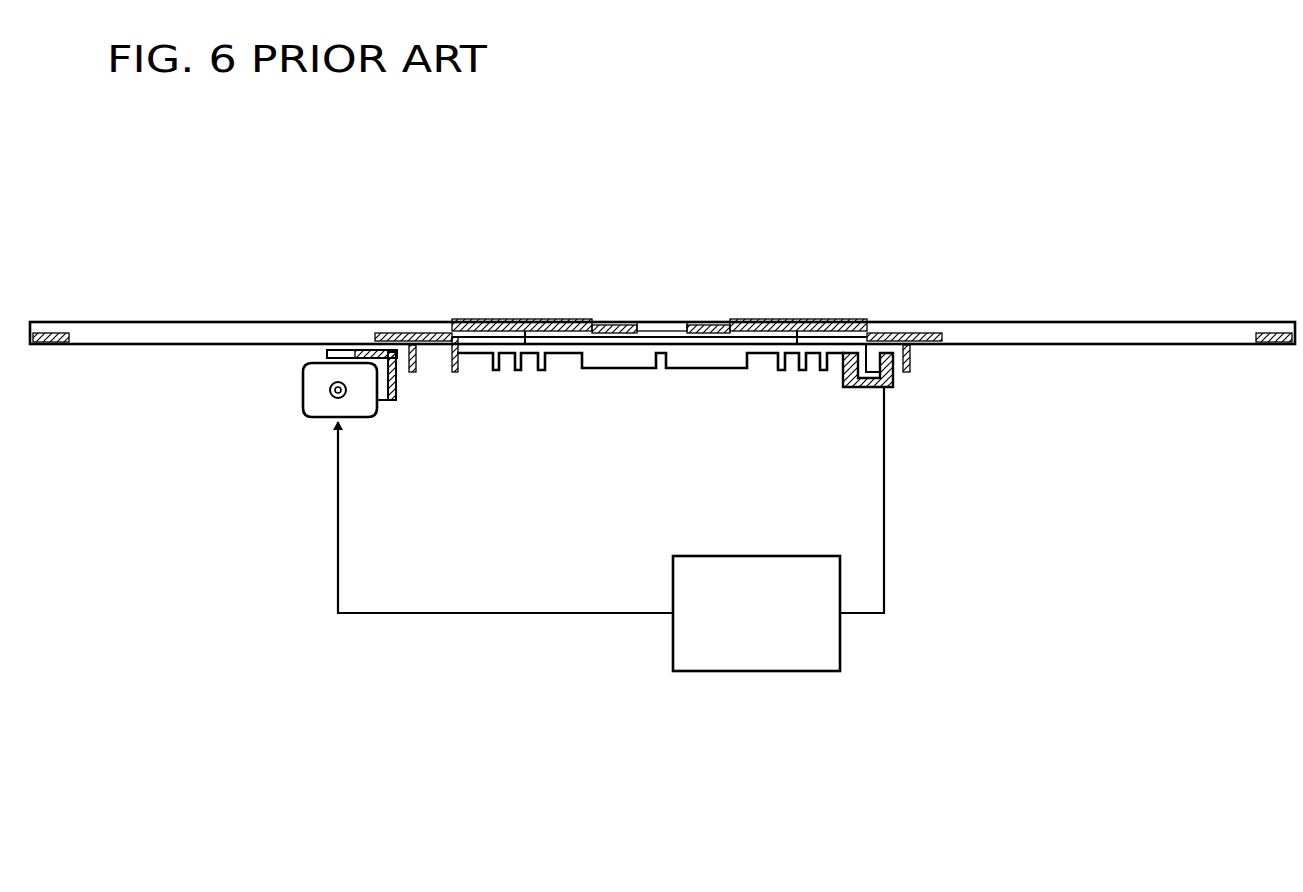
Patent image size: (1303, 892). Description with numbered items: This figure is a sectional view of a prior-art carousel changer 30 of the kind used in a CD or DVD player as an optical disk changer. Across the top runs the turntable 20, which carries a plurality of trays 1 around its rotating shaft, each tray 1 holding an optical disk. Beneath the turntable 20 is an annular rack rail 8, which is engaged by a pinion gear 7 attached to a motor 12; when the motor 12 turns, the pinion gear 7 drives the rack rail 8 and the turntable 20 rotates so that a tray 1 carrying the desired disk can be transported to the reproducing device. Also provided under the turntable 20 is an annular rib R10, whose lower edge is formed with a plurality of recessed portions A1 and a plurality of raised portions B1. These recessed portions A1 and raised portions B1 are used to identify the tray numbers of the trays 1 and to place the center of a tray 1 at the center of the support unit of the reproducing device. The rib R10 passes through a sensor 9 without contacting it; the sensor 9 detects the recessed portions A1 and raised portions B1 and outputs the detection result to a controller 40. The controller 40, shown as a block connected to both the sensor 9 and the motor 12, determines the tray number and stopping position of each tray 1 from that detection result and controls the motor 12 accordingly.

The tray 1 is at (187, 320).
The carousel changer 30 is at (651, 168).
The turntable 20 is at (772, 323).
The pinion gear 7 is at (328, 358).
The rack rail 8 is at (417, 373).
The sensor 9 is at (893, 386).
The motor 12 is at (322, 420).
The controller 40 is at (775, 672).
The raised portion B1 is at (492, 372).
The recessed portion A1 is at (562, 358).
The rib R10 is at (514, 378).